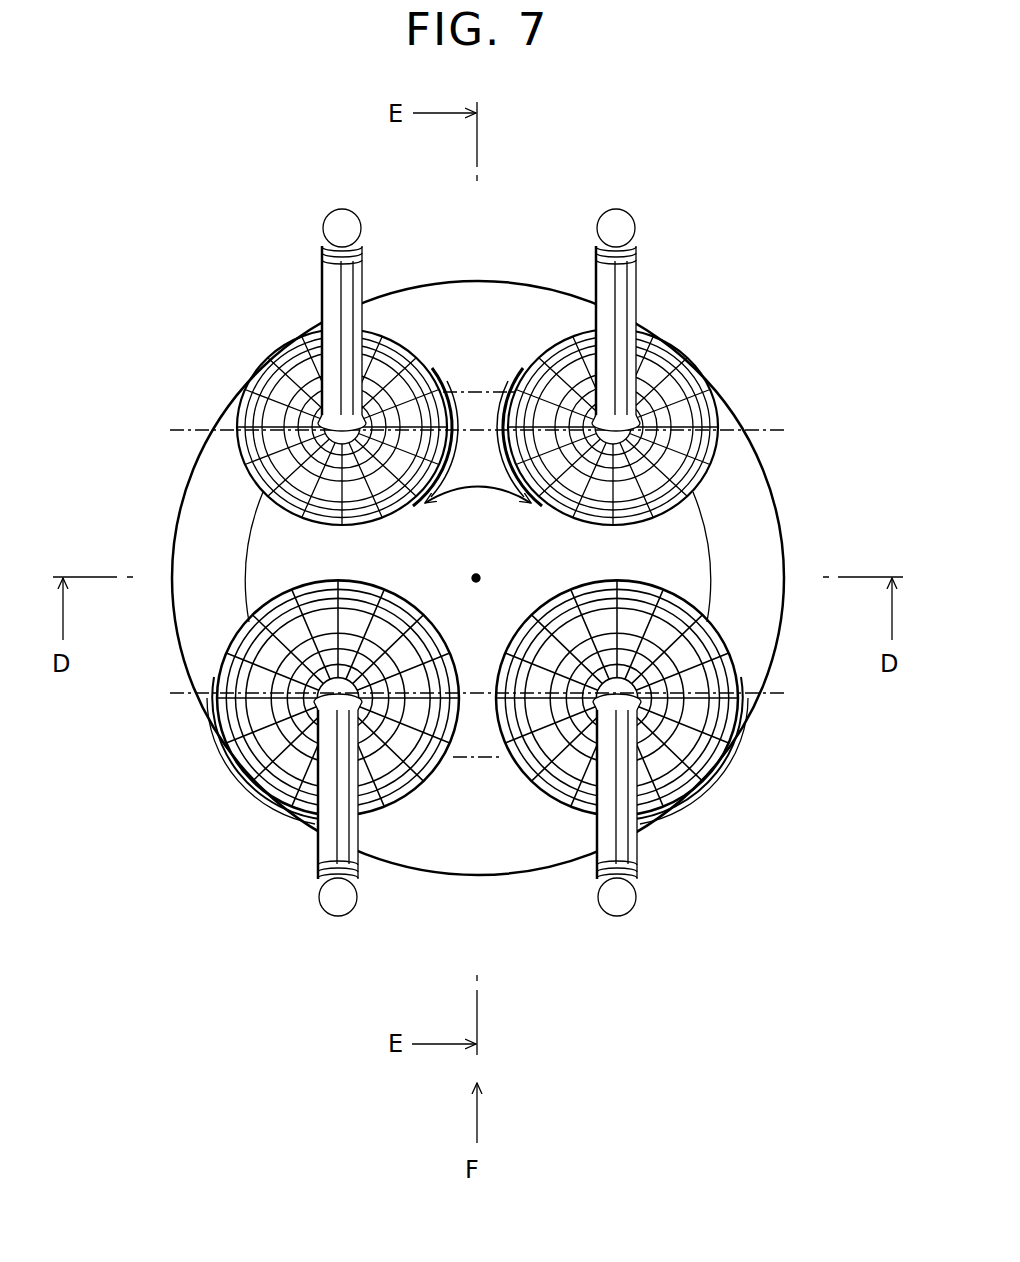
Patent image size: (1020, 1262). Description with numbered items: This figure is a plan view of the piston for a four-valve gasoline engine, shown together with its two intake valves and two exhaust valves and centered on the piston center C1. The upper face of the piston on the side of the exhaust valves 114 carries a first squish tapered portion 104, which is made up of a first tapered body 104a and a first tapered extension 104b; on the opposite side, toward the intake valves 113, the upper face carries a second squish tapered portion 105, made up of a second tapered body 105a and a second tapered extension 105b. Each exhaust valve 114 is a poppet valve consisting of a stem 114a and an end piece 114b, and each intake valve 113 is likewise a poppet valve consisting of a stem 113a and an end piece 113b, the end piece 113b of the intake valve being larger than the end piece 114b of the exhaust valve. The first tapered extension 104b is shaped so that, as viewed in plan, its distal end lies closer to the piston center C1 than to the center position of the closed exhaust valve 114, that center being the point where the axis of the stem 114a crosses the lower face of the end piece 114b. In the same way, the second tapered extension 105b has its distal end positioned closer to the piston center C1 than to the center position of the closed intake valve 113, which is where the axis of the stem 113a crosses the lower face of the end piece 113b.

The first squish tapered portion 104 is at (516, 277).
The first tapered body 104a is at (452, 323).
The first tapered extension 104b is at (470, 492).
The second squish tapered portion 105 is at (440, 878).
The second tapered body 105a is at (505, 840).
The second tapered extension 105b is at (478, 668).
The intake valve 113 is at (244, 772).
The stem 113a is at (333, 850).
The end piece 113b is at (280, 690).
The exhaust valve 114 is at (262, 365).
The stem 114a is at (332, 278).
The end piece 114b is at (266, 455).
The piston center C1 is at (478, 577).